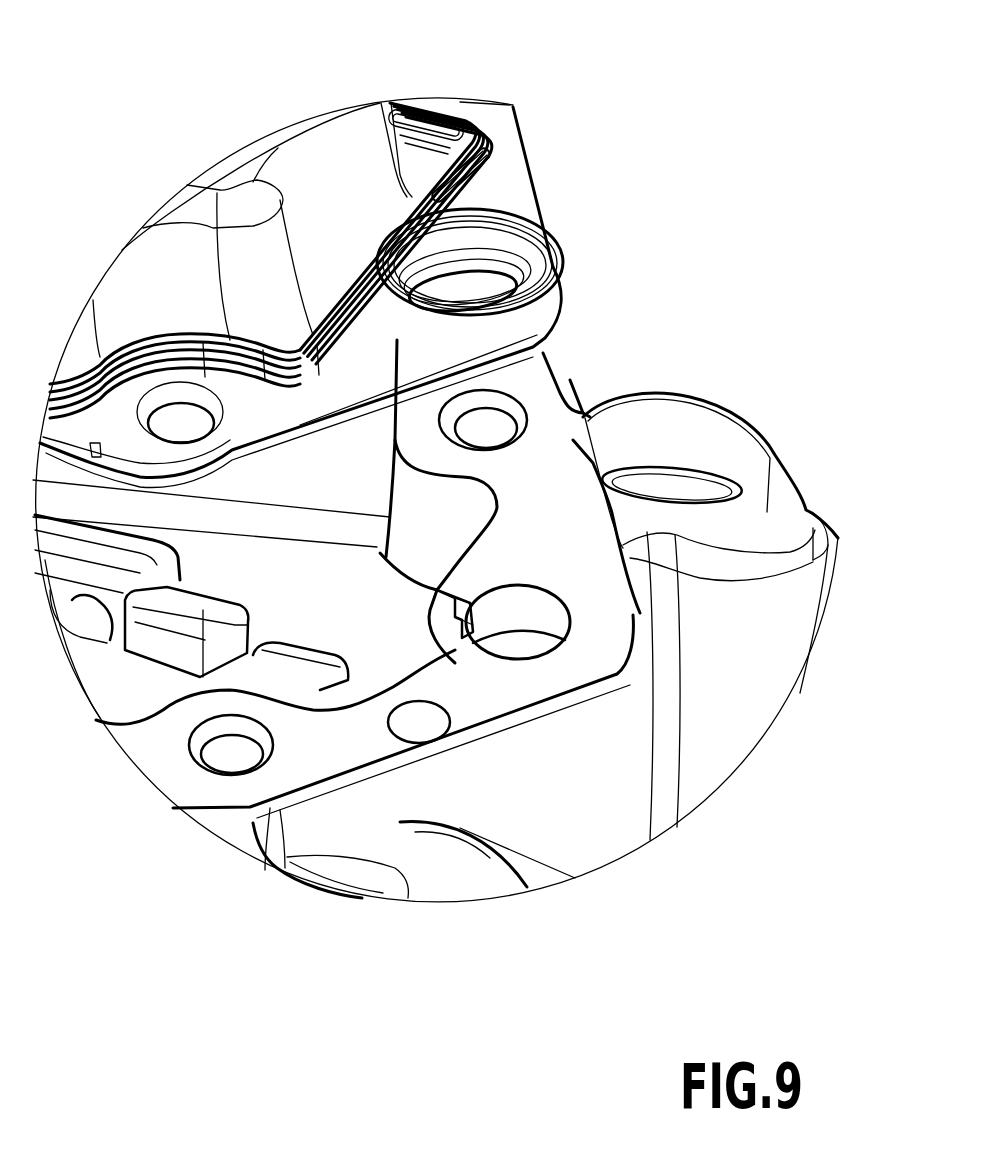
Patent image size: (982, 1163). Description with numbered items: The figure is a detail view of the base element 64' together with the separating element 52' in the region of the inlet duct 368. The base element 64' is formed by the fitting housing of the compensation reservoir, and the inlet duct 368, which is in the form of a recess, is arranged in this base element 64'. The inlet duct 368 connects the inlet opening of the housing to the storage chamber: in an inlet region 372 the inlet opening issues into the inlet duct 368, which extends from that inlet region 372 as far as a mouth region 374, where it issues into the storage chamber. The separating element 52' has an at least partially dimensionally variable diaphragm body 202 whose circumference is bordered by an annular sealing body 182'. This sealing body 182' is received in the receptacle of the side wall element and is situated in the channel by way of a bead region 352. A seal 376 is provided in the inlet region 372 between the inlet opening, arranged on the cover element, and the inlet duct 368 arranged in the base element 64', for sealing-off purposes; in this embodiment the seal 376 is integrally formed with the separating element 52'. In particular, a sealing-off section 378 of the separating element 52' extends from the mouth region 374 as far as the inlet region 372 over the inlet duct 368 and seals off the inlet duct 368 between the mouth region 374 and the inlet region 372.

The diaphragm body 202 is at (280, 177).
The separating element 52' is at (271, 213).
The bead region 352 is at (403, 130).
The sealing body 182' is at (455, 82).
The sealing-off section 378 is at (447, 178).
The seal 376 is at (555, 247).
The inlet region 372 is at (552, 615).
The inlet duct 368 is at (520, 638).
The mouth region 374 is at (455, 665).
The base element 64' is at (435, 663).